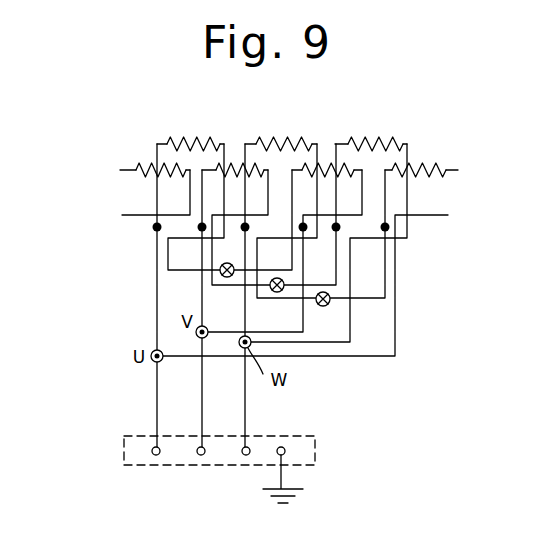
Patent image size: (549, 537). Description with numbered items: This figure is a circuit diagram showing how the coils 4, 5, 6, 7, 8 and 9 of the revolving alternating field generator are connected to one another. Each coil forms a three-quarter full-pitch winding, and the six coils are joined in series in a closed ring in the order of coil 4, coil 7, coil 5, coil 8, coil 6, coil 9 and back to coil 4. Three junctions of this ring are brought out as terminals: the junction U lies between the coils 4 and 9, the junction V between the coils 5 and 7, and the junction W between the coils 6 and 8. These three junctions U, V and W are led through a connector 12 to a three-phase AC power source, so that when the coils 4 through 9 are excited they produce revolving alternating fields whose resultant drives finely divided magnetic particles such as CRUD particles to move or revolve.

The coil 4 is at (177, 137).
The coil 5 is at (237, 162).
The coil 6 is at (281, 137).
The coil 7 is at (330, 162).
The coil 8 is at (376, 137).
The coil 9 is at (142, 162).
The connector 12 is at (110, 452).